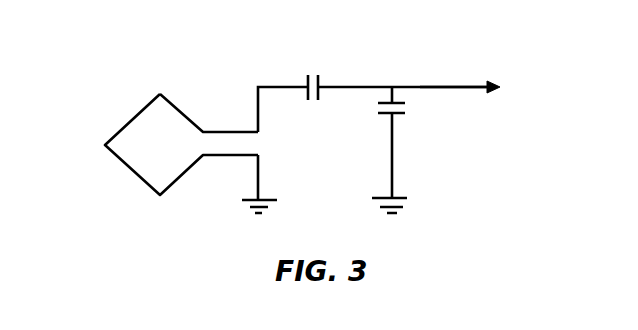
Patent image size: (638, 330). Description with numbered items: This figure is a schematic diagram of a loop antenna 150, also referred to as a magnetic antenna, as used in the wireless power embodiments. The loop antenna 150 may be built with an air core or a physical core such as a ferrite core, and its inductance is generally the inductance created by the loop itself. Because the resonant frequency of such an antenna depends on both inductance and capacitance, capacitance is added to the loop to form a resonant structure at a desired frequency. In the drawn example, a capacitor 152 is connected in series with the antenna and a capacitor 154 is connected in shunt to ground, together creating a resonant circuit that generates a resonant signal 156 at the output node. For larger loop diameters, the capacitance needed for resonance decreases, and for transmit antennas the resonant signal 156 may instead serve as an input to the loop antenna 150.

The loop antenna 150 is at (133, 118).
The capacitor 152 is at (319, 78).
The capacitor 154 is at (398, 115).
The resonant signal 156 is at (423, 85).